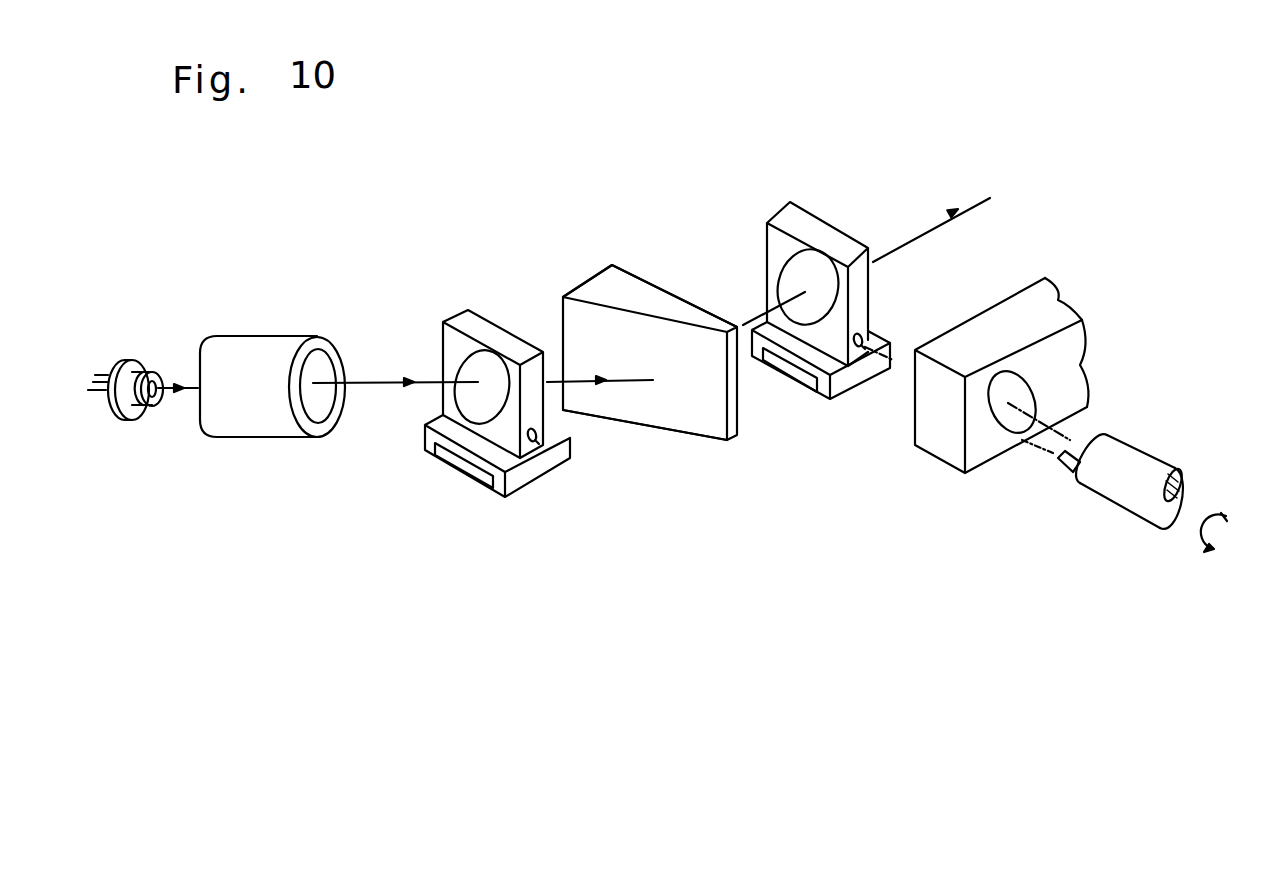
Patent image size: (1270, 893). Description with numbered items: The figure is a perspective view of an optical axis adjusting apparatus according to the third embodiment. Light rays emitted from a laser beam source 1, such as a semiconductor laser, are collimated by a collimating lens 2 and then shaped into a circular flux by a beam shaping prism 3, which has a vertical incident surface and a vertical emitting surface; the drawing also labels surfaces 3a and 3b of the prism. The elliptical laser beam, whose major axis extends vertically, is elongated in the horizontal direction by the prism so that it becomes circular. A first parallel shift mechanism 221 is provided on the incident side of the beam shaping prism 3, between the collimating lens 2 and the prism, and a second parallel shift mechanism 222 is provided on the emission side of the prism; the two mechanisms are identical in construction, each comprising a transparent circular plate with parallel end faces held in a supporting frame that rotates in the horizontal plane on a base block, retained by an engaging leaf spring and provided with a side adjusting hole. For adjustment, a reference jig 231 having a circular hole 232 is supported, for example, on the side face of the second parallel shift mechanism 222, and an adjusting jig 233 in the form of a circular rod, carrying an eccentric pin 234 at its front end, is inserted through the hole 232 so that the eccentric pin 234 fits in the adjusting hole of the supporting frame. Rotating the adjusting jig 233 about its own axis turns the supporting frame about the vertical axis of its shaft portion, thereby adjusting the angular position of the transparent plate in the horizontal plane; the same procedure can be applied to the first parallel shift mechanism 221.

The laser beam source 1 is at (137, 418).
The collimating lens 2 is at (282, 428).
The beam shaping prism 3 is at (650, 371).
The prism bottom surface 3a is at (633, 405).
The prism inclined surface 3b is at (663, 282).
The first parallel shift mechanism 221 is at (474, 419).
The second parallel shift mechanism 222 is at (817, 287).
The reference jig 231 is at (1032, 403).
The circular hole 232 is at (1000, 432).
The adjusting jig 233 is at (1110, 443).
The eccentric pin 234 is at (1065, 468).